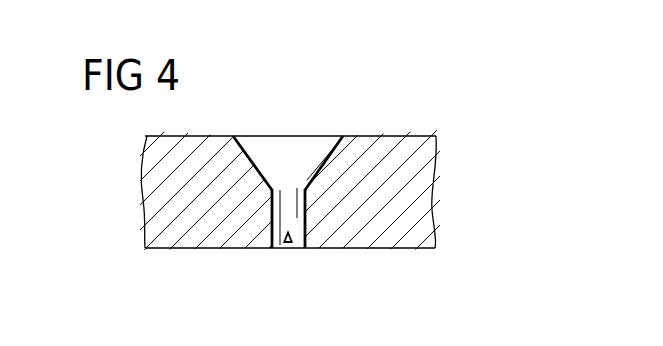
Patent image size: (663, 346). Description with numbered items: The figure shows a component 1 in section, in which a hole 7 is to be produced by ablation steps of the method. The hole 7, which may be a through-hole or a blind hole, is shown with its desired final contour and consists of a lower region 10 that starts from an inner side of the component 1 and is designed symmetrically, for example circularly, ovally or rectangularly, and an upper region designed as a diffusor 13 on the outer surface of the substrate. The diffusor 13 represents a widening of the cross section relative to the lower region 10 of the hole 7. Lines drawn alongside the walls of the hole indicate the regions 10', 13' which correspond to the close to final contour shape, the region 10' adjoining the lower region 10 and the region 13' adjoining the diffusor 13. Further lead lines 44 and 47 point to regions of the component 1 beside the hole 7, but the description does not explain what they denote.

The component 1 is at (125, 217).
The diffusor 13 is at (310, 138).
The close to final contour region of the diffusor 13' is at (247, 132).
The coating layer in the diffuser 44 is at (325, 160).
The channel wall 47 is at (306, 202).
The lower region 10 is at (329, 236).
The close to final contour region of the lower region 10' is at (244, 236).
The hole 7 is at (289, 245).